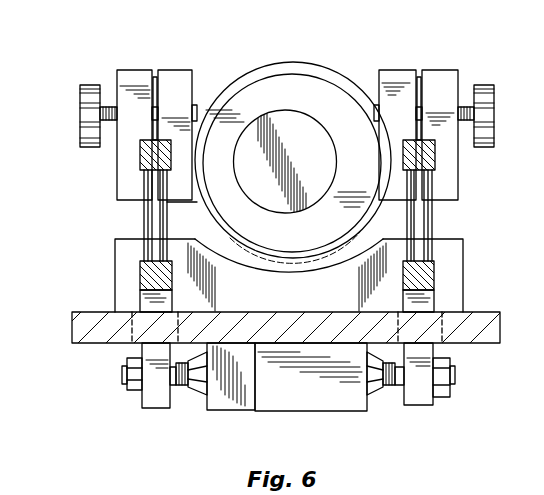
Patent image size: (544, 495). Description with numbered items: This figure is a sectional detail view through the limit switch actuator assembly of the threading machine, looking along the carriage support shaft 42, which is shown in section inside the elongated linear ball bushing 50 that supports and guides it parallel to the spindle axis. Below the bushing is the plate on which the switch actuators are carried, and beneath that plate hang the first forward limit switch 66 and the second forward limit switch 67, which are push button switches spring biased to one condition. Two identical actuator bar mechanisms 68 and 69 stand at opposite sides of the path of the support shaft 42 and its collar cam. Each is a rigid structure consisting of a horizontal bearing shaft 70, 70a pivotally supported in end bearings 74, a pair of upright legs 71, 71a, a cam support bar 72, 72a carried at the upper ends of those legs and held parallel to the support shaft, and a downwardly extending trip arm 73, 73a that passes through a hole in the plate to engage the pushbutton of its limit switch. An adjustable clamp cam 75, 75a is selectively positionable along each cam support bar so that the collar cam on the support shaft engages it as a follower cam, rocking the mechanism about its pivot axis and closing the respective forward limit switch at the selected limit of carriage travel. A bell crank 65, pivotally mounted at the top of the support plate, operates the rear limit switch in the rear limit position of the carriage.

The support shaft 42 is at (309, 134).
The ball bushing 50 is at (298, 82).
The bell crank 65 is at (492, 322).
The first forward limit switch 66 is at (223, 400).
The second forward limit switch 67 is at (343, 403).
The actuator bar mechanism 68 is at (110, 205).
The actuator bar mechanism 69 is at (459, 182).
The bearing shaft 70 is at (142, 272).
The lower pivot block 70a is at (435, 273).
The upright legs 71 is at (143, 222).
The guide rod 71a is at (424, 222).
The cam support bar 72 is at (141, 160).
The upper slide block 72a is at (432, 157).
The trip arm 73 is at (148, 397).
The mounting bracket 73a is at (423, 397).
The end bearings 74 is at (452, 297).
The clamp cam 75 is at (123, 142).
The adjustment knob 75a is at (447, 80).